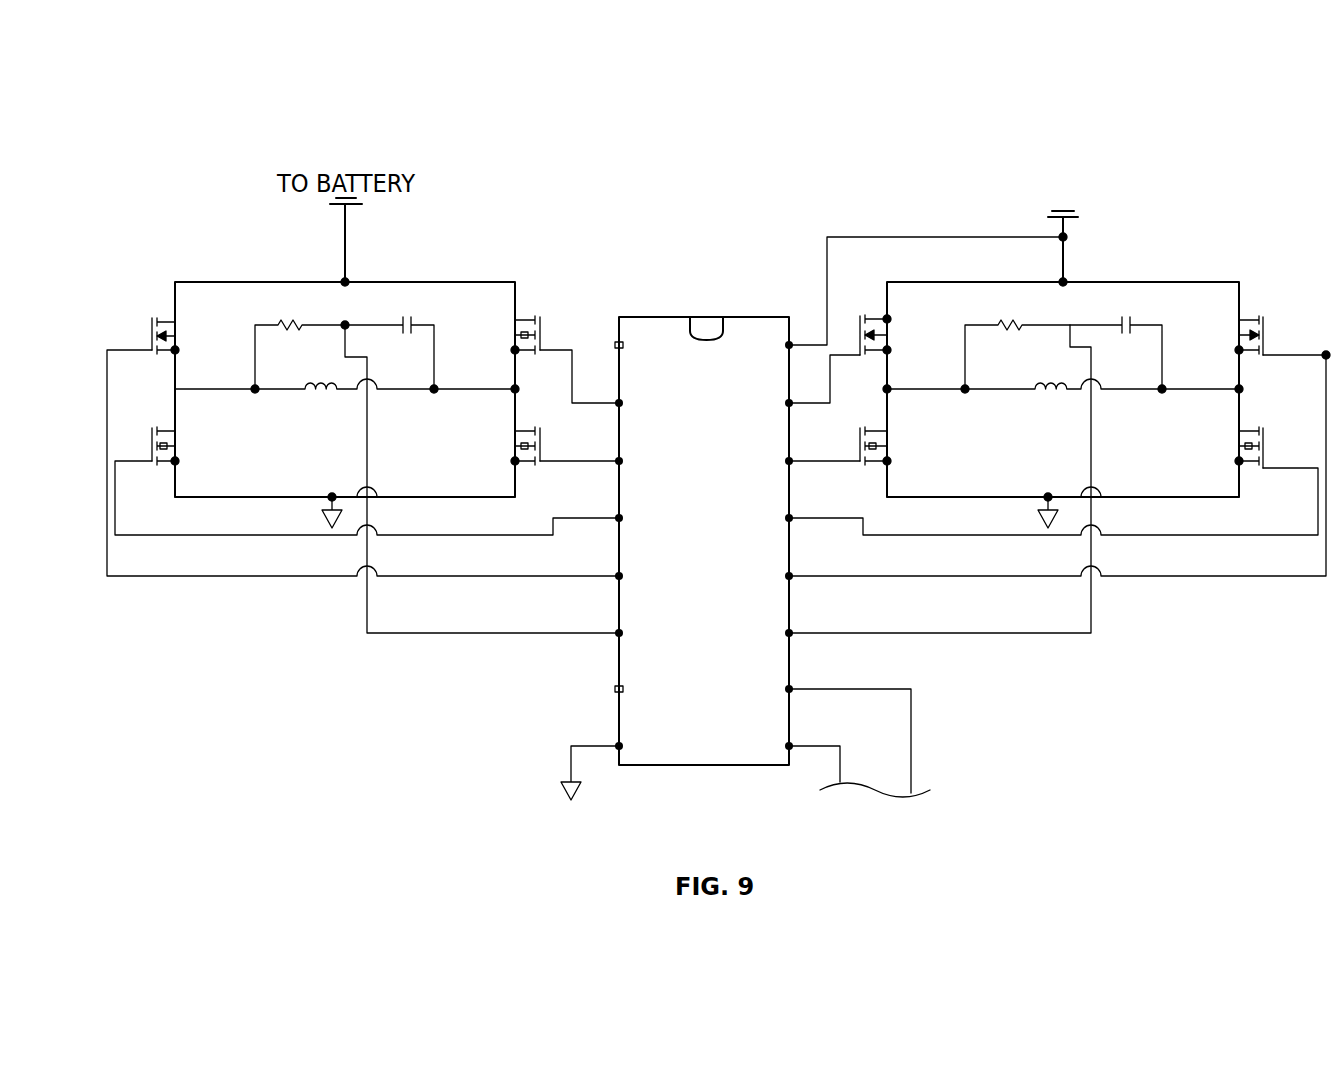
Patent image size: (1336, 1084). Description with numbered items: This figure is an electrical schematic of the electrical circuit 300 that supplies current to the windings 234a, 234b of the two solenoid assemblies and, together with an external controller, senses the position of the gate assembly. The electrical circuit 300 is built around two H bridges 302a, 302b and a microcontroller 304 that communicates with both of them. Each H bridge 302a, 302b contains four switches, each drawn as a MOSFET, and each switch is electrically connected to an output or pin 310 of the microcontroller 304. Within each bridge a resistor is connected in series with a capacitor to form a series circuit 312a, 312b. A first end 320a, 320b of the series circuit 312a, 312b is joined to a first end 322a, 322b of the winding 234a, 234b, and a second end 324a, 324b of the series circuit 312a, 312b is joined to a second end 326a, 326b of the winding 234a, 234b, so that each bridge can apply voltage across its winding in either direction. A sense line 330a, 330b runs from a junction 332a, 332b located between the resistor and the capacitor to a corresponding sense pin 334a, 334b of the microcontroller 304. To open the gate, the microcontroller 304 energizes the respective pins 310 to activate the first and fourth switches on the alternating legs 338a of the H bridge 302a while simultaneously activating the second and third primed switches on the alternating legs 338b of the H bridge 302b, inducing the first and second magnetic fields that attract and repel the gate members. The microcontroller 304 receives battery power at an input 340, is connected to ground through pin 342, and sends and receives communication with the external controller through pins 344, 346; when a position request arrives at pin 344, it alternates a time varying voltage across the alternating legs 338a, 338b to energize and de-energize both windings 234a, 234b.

The electrical circuit 300 is at (1097, 169).
The H bridge 302a is at (440, 268).
The H bridge 302b is at (1164, 244).
The microcontroller 304 is at (673, 317).
The pin 310 is at (755, 403).
The series circuit 312a is at (282, 287).
The series circuit 312b is at (1152, 290).
The first end of series circuit 320a is at (255, 359).
The first end of series circuit 320b is at (965, 359).
The first end of winding 322a is at (262, 393).
The first end of winding 322b is at (985, 393).
The second end of series circuit 324a is at (436, 357).
The second end of series circuit 324b is at (1163, 357).
The second end of winding 326a is at (423, 393).
The second end of winding 326b is at (1150, 393).
The junction 332a is at (345, 325).
The junction 332b is at (1070, 325).
The sense pin 334a is at (618, 631).
The sense pin 334b is at (790, 631).
The alternating legs of H bridge 338a is at (175, 304).
The alternating legs of H bridge 338b is at (885, 305).
The input 340 is at (798, 333).
The ground pin 342 is at (618, 744).
The communication pin 344 is at (790, 688).
The communication pin 346 is at (790, 745).
The winding 234a is at (330, 395).
The winding 234b is at (1060, 392).
The sense line 330a is at (492, 634).
The sense line 330b is at (937, 634).